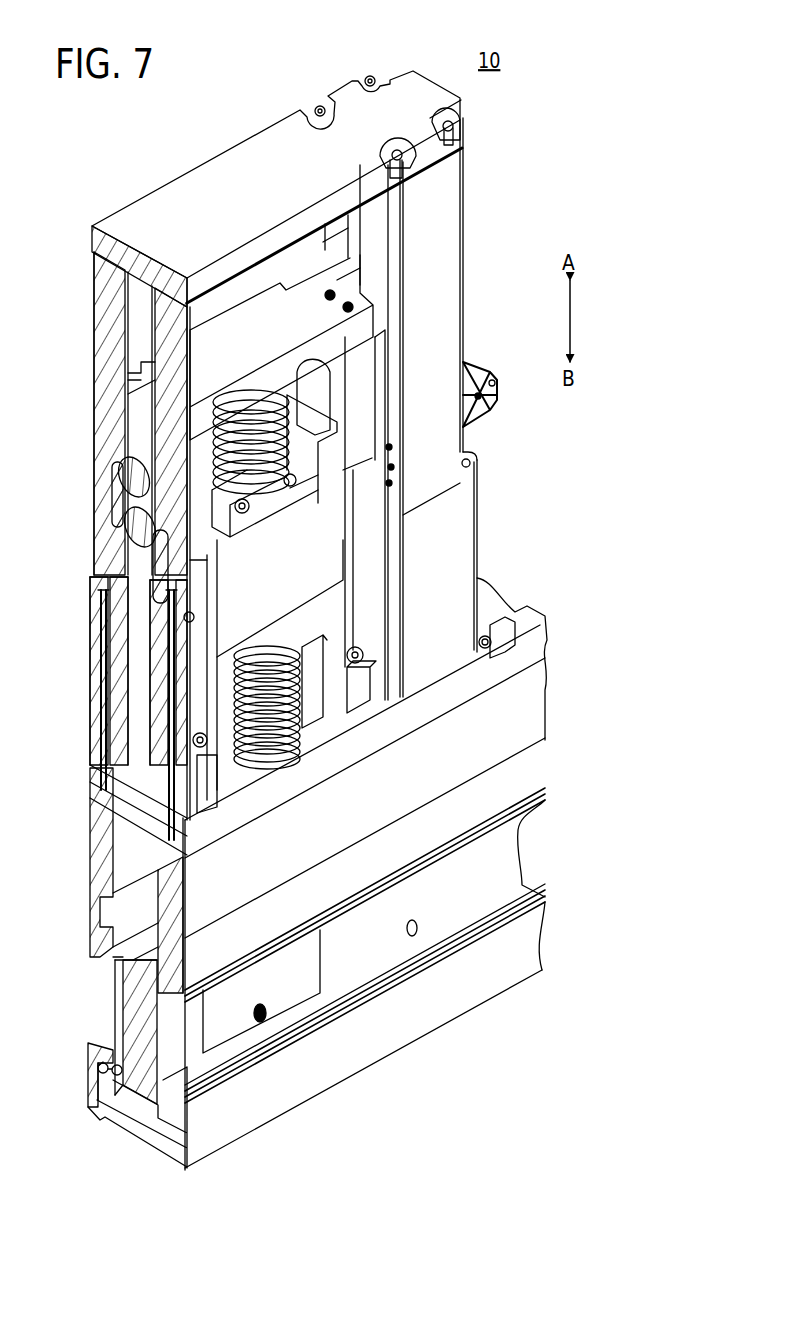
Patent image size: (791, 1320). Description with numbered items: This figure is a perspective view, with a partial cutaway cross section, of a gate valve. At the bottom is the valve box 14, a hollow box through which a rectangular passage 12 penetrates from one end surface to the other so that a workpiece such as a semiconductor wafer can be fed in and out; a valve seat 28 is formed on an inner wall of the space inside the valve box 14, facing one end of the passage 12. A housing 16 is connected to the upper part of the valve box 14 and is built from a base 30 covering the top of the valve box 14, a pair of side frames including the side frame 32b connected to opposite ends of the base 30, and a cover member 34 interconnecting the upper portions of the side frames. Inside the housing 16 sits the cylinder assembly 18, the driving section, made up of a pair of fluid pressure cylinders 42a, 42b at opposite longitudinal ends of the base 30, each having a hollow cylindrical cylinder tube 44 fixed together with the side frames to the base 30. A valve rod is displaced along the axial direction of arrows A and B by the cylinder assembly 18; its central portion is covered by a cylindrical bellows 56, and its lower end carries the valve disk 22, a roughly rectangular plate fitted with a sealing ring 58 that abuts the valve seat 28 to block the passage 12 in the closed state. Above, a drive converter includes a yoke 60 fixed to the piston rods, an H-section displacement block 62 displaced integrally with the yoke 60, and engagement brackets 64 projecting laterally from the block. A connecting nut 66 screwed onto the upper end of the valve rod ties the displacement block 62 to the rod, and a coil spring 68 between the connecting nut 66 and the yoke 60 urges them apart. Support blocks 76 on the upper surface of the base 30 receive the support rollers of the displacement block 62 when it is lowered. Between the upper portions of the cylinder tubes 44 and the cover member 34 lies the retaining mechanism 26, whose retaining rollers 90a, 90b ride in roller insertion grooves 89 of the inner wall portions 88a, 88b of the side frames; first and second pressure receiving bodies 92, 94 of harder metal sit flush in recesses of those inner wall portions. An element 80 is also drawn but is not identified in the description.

The passage 12 is at (118, 960).
The valve box 14 is at (343, 1052).
The housing 16 is at (467, 186).
The cylinder assembly 18 is at (488, 514).
The valve disk 22 is at (123, 1000).
The retaining mechanism 26 is at (90, 297).
The valve seat 28 is at (98, 1068).
The base 30 is at (520, 650).
The side frame 32b is at (430, 318).
The cover member 34 is at (262, 150).
The fluid pressure cylinder 42a is at (90, 652).
The fluid pressure cylinder 42b is at (480, 566).
The cylinder tube 44 is at (100, 624).
The bellows 56 is at (260, 747).
The sealing ring 58 is at (98, 1094).
The yoke 60 is at (307, 297).
The displacement block 62 is at (325, 606).
The engagement bracket 64 is at (195, 596).
The connecting nut 66 is at (273, 513).
The spring 68 is at (240, 415).
The support block 76 is at (207, 793).
The support column 80 is at (358, 383).
The inner wall portion 88a is at (113, 341).
The inner wall portion 88b is at (370, 246).
The roller insertion groove 89 is at (135, 371).
The retaining roller 90a is at (120, 530).
The retaining roller 90b is at (115, 490).
The first pressure receiving body 92 is at (152, 578).
The second pressure receiving body 94 is at (112, 503).